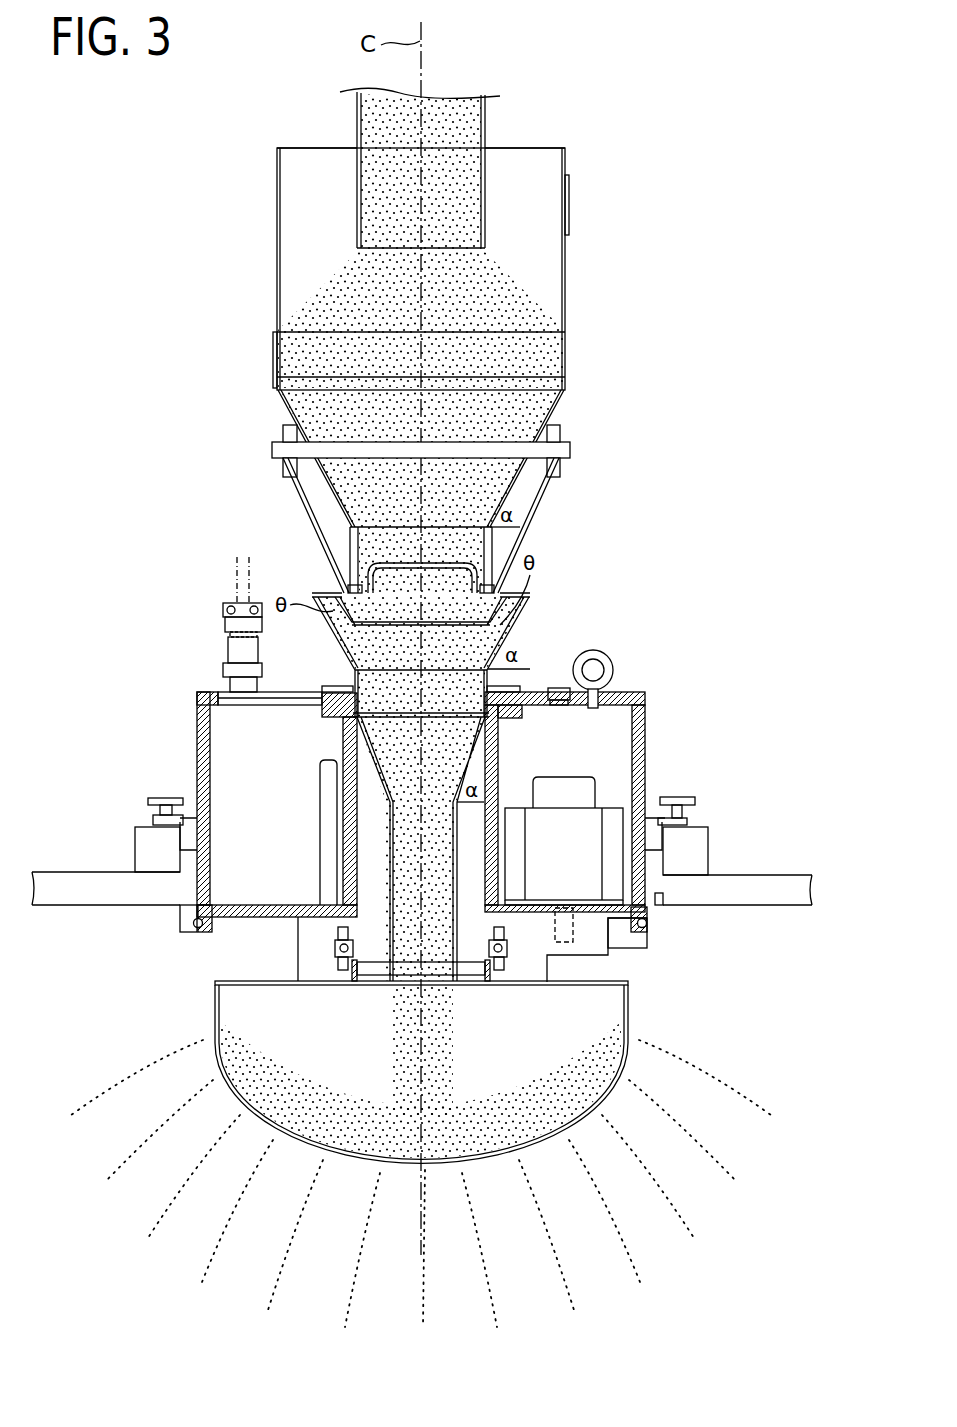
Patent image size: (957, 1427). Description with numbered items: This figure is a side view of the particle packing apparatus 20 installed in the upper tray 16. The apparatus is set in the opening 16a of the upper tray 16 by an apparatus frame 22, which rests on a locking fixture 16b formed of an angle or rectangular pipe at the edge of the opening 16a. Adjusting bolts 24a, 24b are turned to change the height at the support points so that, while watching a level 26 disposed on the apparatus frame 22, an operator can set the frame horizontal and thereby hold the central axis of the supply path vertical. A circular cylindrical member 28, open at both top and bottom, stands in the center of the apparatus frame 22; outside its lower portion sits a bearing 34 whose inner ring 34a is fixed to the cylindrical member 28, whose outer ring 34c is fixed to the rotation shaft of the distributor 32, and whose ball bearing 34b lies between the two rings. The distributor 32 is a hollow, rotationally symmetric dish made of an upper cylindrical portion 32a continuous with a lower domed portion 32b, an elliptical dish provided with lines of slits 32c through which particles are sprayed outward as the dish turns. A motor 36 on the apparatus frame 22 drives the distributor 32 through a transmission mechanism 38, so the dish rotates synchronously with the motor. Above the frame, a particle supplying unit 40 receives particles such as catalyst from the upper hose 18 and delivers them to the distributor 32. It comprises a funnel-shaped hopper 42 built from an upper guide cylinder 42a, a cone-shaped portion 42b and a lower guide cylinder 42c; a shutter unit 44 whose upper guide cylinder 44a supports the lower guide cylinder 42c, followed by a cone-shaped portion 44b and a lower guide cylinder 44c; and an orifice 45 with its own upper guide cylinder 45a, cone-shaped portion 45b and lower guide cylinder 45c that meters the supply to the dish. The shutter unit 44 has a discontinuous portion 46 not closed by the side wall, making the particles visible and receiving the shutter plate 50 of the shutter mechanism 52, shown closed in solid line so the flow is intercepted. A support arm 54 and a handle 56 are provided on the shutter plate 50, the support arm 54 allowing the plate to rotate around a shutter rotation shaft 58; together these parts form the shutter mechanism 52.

The upper tray 16 is at (787, 872).
The opening 16a is at (653, 897).
The locking fixture 16b is at (708, 855).
The upper hose 18 is at (356, 117).
The particle packing apparatus 20 is at (622, 147).
The apparatus frame 22 is at (658, 687).
The adjusting bolt 24a is at (150, 800).
The adjusting bolt 24b is at (680, 797).
The level 26 is at (560, 688).
The circular cylindrical member 28 is at (343, 845).
The distributor 32 is at (674, 1015).
The upper cylindrical portion 32a is at (215, 1020).
The domed portion 32b is at (237, 1100).
The slits 32c is at (298, 1142).
The bearing 34 is at (316, 945).
The inner ring 34a is at (355, 962).
The ball bearing 34b is at (347, 962).
The outer ring 34c is at (338, 962).
The motor 36 is at (580, 820).
The transmission mechanism 38 is at (593, 942).
The particle supplying unit 40 is at (75, 338).
The hopper 42 is at (133, 234).
The upper guide cylinder 42a is at (277, 260).
The cone-shaped portion 42b is at (290, 413).
The lower guide cylinder 42c is at (350, 535).
The shutter unit 44 is at (133, 518).
The upper guide cylinder 44a is at (355, 553).
The cone-shaped portion 44b is at (362, 634).
The lower guide cylinder 44c is at (362, 677).
The orifice 45 is at (133, 688).
The upper guide cylinder 45a is at (330, 705).
The cone-shaped portion 45b is at (355, 752).
The lower guide cylinder 45c is at (388, 818).
The discontinuous portion 46 is at (322, 580).
The shutter plate 50 is at (515, 612).
The shutter mechanism 52 is at (645, 427).
The support arm 54 is at (538, 506).
The handle 56 is at (470, 567).
The shutter rotation shaft 58 is at (570, 450).